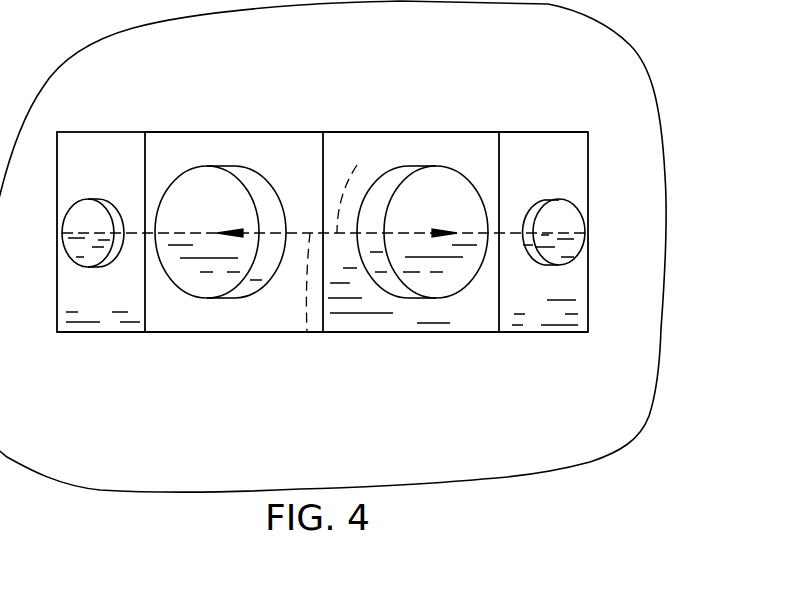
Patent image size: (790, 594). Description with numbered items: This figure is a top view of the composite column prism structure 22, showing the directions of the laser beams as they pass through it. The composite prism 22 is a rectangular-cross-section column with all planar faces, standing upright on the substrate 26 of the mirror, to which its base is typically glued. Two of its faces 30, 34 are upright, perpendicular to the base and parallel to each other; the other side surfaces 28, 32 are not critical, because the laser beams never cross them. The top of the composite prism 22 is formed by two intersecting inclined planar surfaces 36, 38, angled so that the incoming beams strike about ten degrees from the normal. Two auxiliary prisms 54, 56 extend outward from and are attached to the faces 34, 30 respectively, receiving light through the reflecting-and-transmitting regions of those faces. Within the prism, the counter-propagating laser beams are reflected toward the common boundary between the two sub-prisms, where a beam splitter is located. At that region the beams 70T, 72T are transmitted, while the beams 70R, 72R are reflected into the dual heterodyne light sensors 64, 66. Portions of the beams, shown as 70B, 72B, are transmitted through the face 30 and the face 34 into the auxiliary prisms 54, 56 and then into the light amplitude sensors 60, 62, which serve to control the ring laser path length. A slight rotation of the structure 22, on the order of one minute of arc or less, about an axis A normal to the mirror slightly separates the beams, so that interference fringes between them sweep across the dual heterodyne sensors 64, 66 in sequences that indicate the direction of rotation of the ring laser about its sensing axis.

The composite column prism 22 is at (476, 342).
The substrate 26 is at (610, 407).
The side surface 28 is at (398, 334).
The face 30 is at (500, 268).
The side surface 32 is at (437, 132).
The face 34 is at (143, 315).
The planar surface 36 is at (293, 148).
The planar surface 38 is at (338, 148).
The auxiliary prism 54 is at (72, 323).
The auxiliary prism 56 is at (530, 142).
The light amplitude sensor 60 is at (97, 255).
The light amplitude sensor 62 is at (545, 212).
The dual heterodyne light sensor 64 is at (228, 288).
The dual heterodyne light sensor 66 is at (432, 282).
The transmitted beam 70B is at (137, 230).
The transmitted beam 70T is at (372, 186).
The reflected beam 70R is at (308, 333).
The transmitted beam 72B is at (509, 232).
The reflected beam 72R is at (429, 152).
The transmitted beam 72T is at (333, 374).
The axis A is at (322, 231).